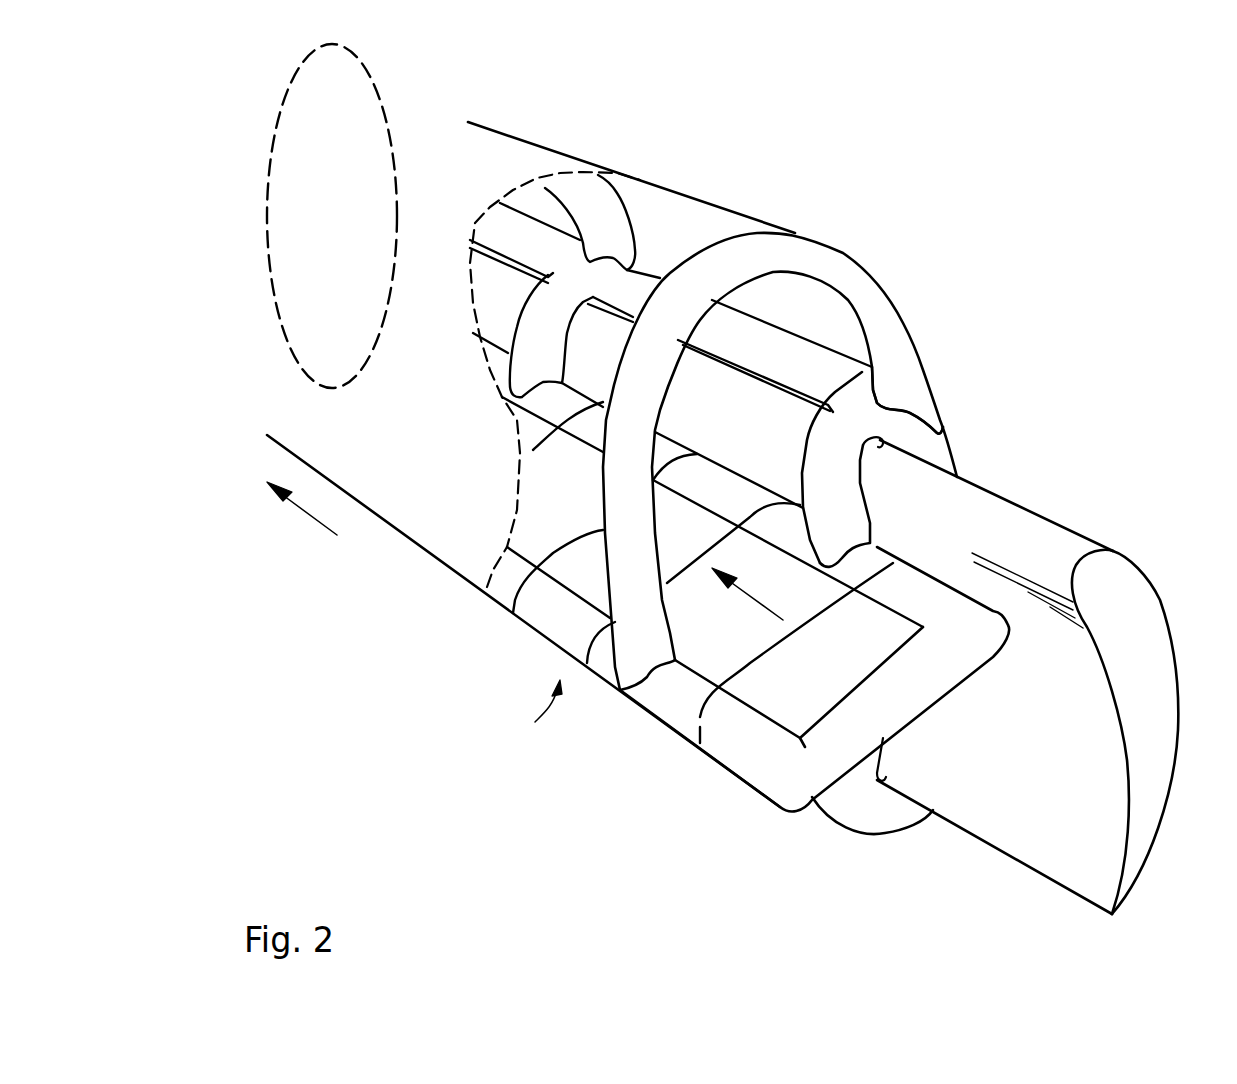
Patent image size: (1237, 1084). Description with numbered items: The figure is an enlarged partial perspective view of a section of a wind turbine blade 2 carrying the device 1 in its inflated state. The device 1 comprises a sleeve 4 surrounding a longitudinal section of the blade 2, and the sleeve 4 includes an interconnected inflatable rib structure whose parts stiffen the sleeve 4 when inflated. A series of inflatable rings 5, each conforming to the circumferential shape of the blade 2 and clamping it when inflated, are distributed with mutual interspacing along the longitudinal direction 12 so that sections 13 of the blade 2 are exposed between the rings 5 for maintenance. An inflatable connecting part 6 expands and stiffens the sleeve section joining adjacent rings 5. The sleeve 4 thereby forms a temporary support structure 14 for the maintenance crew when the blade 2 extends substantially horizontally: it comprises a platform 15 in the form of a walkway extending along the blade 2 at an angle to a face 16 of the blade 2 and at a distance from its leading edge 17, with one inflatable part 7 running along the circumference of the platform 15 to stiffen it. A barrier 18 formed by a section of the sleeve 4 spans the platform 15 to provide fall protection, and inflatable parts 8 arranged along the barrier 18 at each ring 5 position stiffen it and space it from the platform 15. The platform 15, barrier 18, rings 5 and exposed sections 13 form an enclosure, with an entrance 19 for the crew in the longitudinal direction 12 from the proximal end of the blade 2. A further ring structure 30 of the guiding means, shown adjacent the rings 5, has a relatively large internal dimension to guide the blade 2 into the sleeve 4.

The device 1 is at (714, 490).
The blade 2 is at (1047, 677).
The sleeve 4 is at (437, 563).
The inflatable ring 5 is at (540, 327).
The inflatable connecting part 6 is at (497, 231).
The inflatable part along the platform circumference 7 is at (738, 752).
The inflatable part along the barrier 8 is at (850, 283).
The longitudinal direction 12 is at (301, 512).
The exposed section of the blade 13 is at (511, 302).
The temporary support structure 14 is at (537, 720).
The platform 15 is at (577, 559).
The face of the blade 16 is at (1000, 818).
The leading edge 17 is at (1033, 533).
The barrier 18 is at (690, 190).
The entrance 19 is at (726, 540).
The further ring structure 30 is at (270, 167).